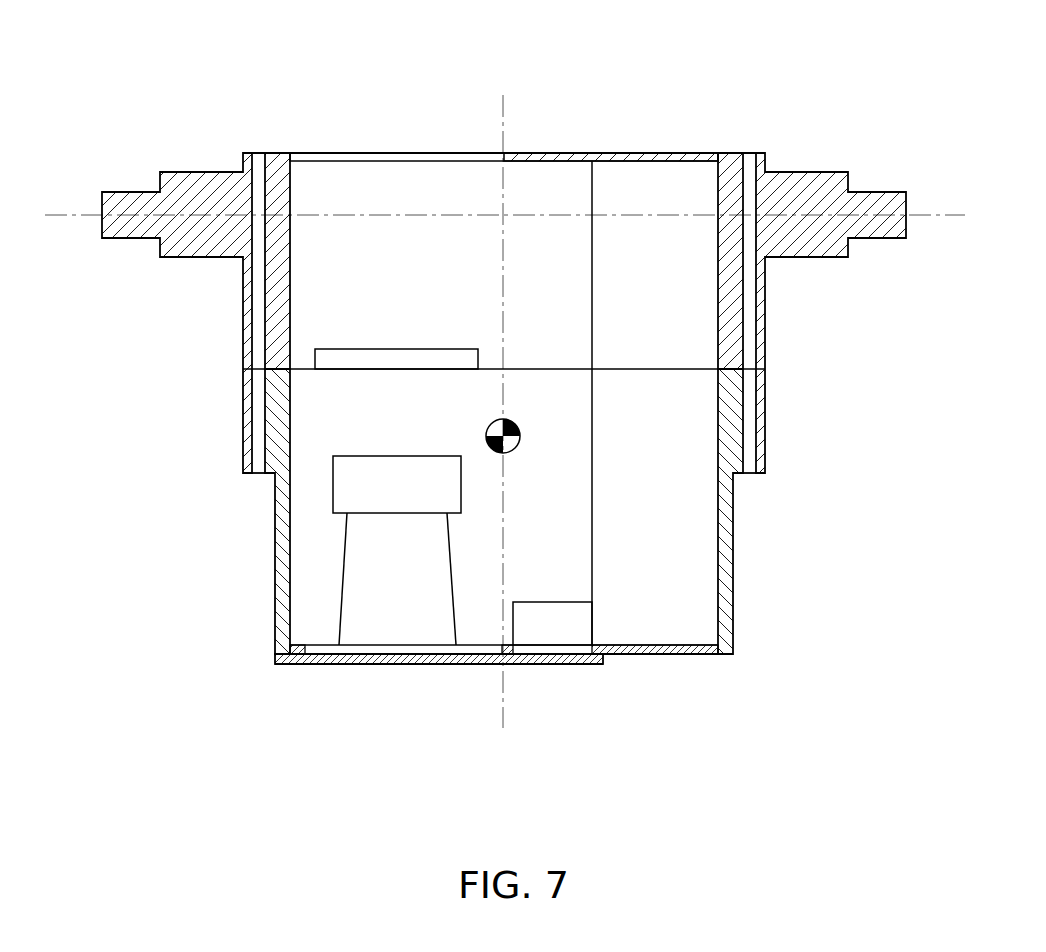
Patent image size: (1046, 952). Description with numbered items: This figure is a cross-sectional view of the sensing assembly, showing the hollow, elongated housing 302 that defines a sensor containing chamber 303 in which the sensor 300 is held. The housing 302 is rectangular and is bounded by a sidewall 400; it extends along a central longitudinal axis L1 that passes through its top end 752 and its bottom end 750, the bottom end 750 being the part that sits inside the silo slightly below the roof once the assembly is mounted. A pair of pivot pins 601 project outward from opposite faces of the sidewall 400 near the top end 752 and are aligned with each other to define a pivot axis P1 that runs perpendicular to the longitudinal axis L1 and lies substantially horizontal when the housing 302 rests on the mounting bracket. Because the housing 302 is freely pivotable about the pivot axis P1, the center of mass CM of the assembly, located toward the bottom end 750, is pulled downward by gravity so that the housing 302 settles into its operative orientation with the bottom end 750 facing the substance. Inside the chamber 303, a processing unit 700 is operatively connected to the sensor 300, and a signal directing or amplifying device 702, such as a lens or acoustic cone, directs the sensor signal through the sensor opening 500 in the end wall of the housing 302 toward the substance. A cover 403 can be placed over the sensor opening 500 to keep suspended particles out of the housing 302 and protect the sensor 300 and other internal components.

The housing 302 is at (238, 96).
The top plate of container 752 is at (689, 133).
The pivot pins 601 is at (130, 238).
The pivot axis P1 is at (58, 213).
The processing unit 700 is at (356, 342).
The sensor 300 is at (318, 493).
The center of mass CM is at (518, 447).
The signal directing or amplifying device 702 is at (327, 581).
The sidewall 400 is at (737, 566).
The sensor containing chamber 303 is at (685, 612).
The sensor opening 500 is at (324, 656).
The cover 403 is at (405, 666).
The central longitudinal axis L1 is at (503, 715).
The bottom end 750 is at (700, 668).